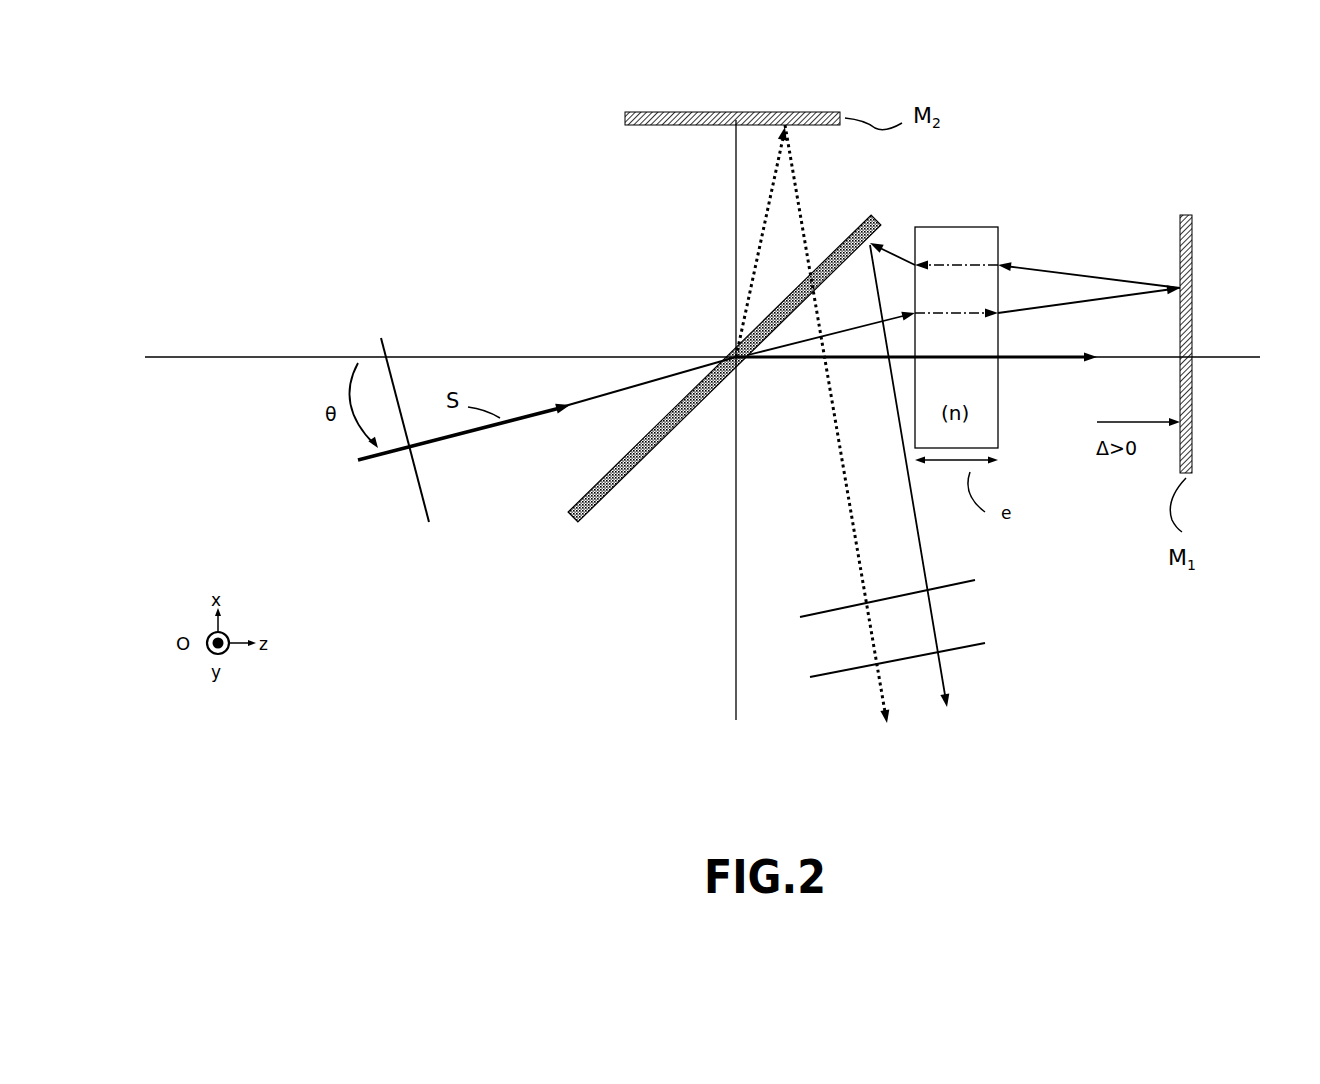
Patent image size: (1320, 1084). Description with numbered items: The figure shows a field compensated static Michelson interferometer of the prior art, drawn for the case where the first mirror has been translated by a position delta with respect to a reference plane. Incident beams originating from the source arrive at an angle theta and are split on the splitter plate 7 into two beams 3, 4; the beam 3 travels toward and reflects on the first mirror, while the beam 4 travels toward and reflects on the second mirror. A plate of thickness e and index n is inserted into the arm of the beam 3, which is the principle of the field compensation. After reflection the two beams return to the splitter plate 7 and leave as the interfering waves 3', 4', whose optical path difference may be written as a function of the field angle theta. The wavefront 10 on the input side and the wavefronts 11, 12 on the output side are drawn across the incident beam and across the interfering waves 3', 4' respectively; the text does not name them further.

The beam 3 is at (964, 313).
The interfering wave 3' is at (987, 446).
The beam 4 is at (721, 242).
The interfering wave 4' is at (833, 424).
The splitter plate 7 is at (585, 486).
The light source wavefront 10 is at (418, 516).
The output wavefront 11 is at (967, 590).
The output wavefront 12 is at (980, 650).